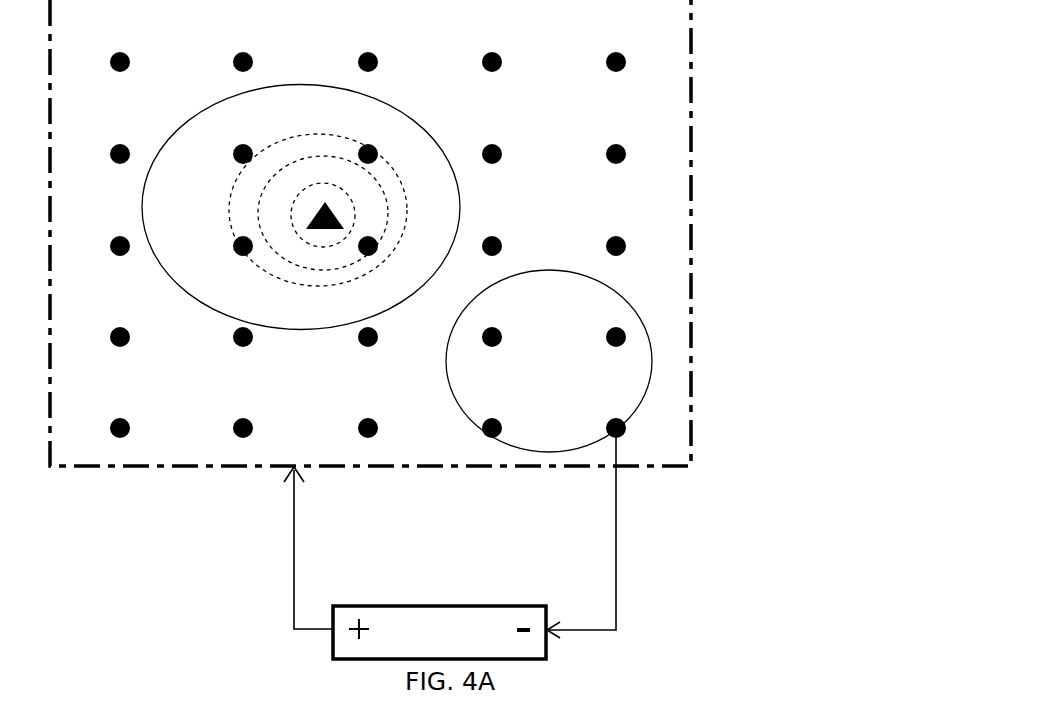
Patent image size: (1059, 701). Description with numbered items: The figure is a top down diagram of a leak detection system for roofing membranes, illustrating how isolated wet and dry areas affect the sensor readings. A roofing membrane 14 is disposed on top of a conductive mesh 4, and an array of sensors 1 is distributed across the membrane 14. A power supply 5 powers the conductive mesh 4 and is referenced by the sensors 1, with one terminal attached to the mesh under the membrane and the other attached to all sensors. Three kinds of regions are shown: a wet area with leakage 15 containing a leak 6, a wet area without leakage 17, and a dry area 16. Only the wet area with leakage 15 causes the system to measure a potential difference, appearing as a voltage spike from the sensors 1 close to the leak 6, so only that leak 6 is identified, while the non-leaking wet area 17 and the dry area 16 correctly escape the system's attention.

The sensors 1 is at (623, 242).
The conductive mesh 4 is at (122, 468).
The power supply 5 is at (395, 605).
The leak 6 is at (325, 200).
The roofing membrane 14 is at (590, 107).
The wet area with leakage 15 is at (383, 98).
The dry area 16 is at (453, 285).
The wet area without leakage 17 is at (645, 323).